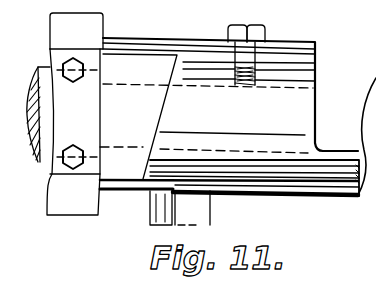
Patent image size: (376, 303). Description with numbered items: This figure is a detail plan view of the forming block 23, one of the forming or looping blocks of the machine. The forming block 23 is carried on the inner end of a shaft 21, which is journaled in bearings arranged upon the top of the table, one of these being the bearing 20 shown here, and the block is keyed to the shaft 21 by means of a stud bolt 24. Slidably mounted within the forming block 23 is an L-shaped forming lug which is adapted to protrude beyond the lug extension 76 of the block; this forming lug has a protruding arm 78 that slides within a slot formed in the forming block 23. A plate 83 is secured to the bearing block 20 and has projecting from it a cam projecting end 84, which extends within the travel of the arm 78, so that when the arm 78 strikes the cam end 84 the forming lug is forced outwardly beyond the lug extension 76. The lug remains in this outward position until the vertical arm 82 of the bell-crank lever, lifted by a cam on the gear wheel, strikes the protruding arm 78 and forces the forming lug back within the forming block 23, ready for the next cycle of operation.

The bearing 20 is at (80, 211).
The shaft 21 is at (40, 163).
The forming block 23 is at (239, 194).
The stud bolt 24 is at (265, 32).
The lug extension 76 is at (366, 192).
The protruding arm 78 is at (150, 225).
The vertical arm 82 is at (203, 225).
The plate 83 is at (140, 116).
The cam projecting end 84 is at (165, 113).